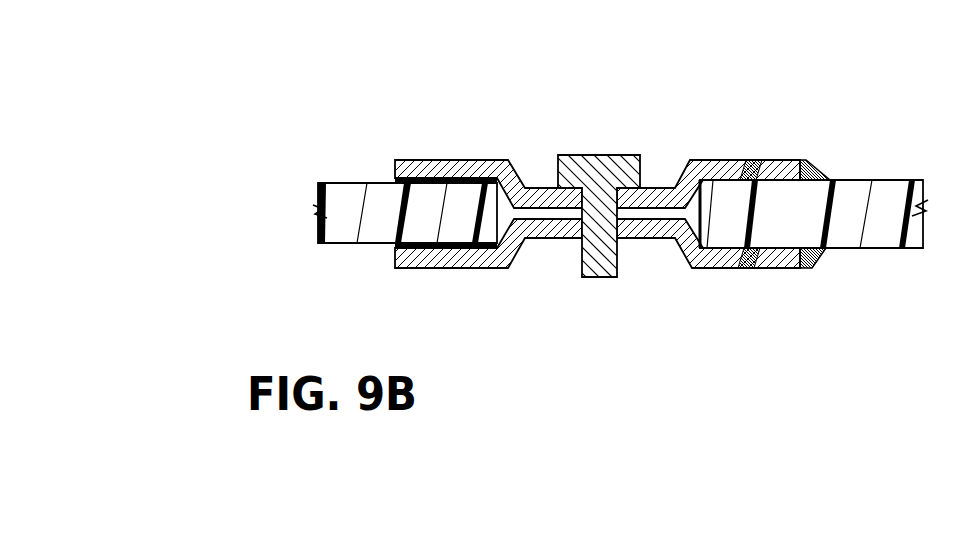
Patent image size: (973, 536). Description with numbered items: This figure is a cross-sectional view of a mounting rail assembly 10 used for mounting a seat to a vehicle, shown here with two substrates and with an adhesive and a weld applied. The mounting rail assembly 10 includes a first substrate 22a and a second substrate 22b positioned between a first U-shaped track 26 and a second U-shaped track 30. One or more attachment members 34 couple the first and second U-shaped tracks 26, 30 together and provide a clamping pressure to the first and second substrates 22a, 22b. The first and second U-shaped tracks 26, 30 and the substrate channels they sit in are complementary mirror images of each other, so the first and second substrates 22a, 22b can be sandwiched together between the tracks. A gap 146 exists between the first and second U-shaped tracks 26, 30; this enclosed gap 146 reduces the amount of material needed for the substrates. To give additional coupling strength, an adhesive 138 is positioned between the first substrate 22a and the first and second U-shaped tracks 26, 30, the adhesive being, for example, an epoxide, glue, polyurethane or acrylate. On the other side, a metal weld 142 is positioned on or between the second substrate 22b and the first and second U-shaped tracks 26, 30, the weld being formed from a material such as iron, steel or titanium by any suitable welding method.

The mounting rail assembly 10 is at (672, 124).
The first substrate 22a is at (341, 200).
The second substrate 22b is at (883, 200).
The first U-shaped track 26 is at (456, 160).
The second U-shaped track 30 is at (473, 258).
The attachment member 34 is at (596, 157).
The adhesive 138 is at (398, 182).
The metal weld 142 is at (820, 160).
The gap 146 is at (642, 218).